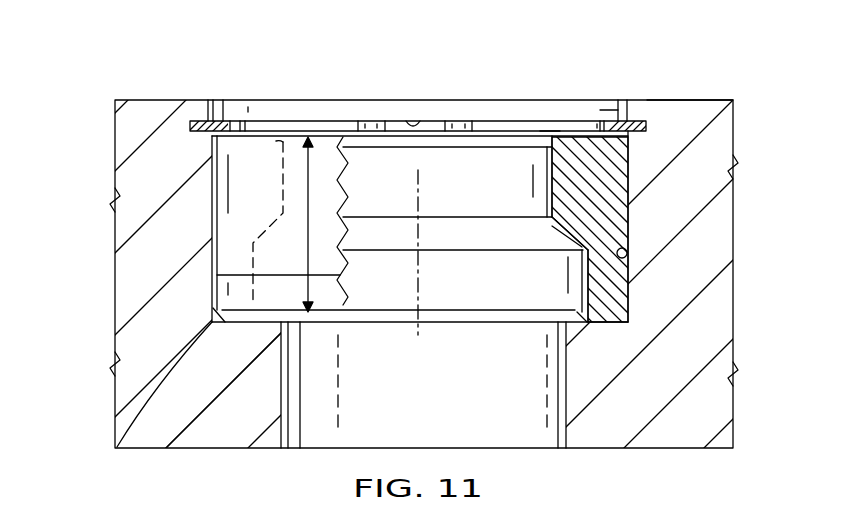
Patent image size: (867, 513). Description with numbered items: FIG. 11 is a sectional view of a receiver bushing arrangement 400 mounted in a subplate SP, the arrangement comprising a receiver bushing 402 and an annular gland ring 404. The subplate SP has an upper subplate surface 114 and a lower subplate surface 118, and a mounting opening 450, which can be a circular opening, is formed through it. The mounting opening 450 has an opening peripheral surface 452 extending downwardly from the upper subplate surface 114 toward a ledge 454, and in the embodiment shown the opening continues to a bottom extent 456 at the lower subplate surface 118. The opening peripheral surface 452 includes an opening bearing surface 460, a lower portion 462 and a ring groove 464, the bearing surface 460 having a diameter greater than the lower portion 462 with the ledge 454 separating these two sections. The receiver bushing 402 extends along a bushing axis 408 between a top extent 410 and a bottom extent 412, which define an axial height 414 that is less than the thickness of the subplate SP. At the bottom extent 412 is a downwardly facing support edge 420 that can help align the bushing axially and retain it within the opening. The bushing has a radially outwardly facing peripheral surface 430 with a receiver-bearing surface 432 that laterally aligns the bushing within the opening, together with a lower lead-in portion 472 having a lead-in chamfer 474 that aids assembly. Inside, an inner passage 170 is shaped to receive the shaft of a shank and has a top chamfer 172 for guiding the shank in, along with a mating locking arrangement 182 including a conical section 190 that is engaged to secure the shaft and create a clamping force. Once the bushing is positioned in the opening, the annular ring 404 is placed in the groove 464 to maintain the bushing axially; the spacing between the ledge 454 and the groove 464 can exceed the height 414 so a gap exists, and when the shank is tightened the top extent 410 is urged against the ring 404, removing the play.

The lower subplate surface 118 is at (697, 449).
The upper subplate surface 114 is at (673, 100).
The subplate SP is at (710, 98).
The receiver bushing arrangement 400 is at (218, 75).
The ring groove 464 is at (196, 123).
The opening peripheral surface 452 is at (617, 112).
The annular gland ring 404 is at (604, 101).
The top chamfer 172 is at (544, 128).
The inner passage 170 is at (500, 165).
The top extent 410 is at (262, 120).
The axial height 414 is at (315, 203).
The receiver-bearing surface 432 is at (210, 208).
The mounting opening 450 is at (216, 197).
The peripheral surface 430 is at (201, 234).
The lower lead-in portion 472 is at (215, 288).
The lead-in chamfer 474 is at (212, 322).
The ledge 454 is at (570, 310).
The bottom extent 412 is at (607, 322).
The conical section 190 is at (552, 222).
The mating locking arrangement 182 is at (553, 269).
The receiver bushing 402 is at (626, 168).
The opening bearing surface 460 is at (627, 248).
The lower portion 462 is at (292, 449).
The bottom extent 456 is at (543, 447).
The bushing axis 408 is at (420, 335).
The support edge 420 is at (250, 335).